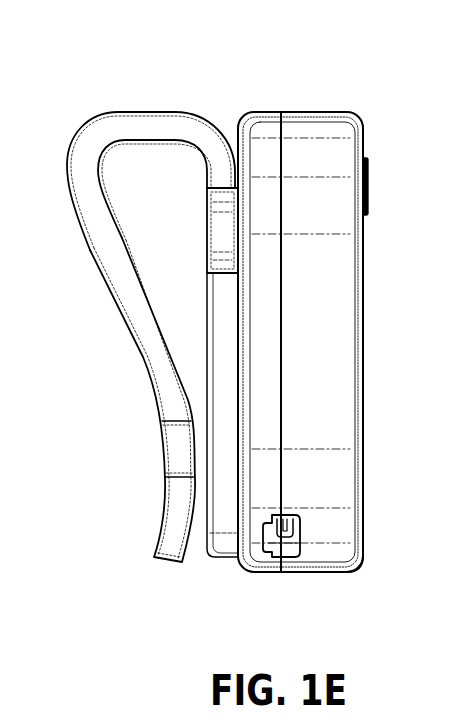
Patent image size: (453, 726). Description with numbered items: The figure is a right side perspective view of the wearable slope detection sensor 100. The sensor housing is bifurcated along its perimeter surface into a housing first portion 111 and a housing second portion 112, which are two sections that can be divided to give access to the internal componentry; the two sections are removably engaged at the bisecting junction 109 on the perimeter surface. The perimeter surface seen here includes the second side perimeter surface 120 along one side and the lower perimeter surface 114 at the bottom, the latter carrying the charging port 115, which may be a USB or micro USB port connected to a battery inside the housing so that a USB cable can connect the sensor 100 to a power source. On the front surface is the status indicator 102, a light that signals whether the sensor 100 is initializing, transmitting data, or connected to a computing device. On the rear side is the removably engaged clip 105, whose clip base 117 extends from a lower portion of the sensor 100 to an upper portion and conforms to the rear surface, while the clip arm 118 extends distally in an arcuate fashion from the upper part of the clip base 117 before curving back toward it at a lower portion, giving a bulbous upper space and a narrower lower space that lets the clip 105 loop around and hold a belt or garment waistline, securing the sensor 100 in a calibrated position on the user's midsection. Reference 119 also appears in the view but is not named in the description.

The sensor 100 is at (76, 89).
The clip arm 118 is at (88, 135).
The clip 105 is at (213, 318).
The clip base 117 is at (222, 292).
The housing outer shell 119 is at (326, 112).
The second side perimeter surface 120 is at (342, 403).
The housing second portion 112 is at (257, 125).
The housing first portion 111 is at (340, 262).
The bisecting junction 109 is at (280, 505).
The status indicator 102 is at (367, 187).
The charging port 115 is at (280, 558).
The lower perimeter surface 114 is at (357, 570).